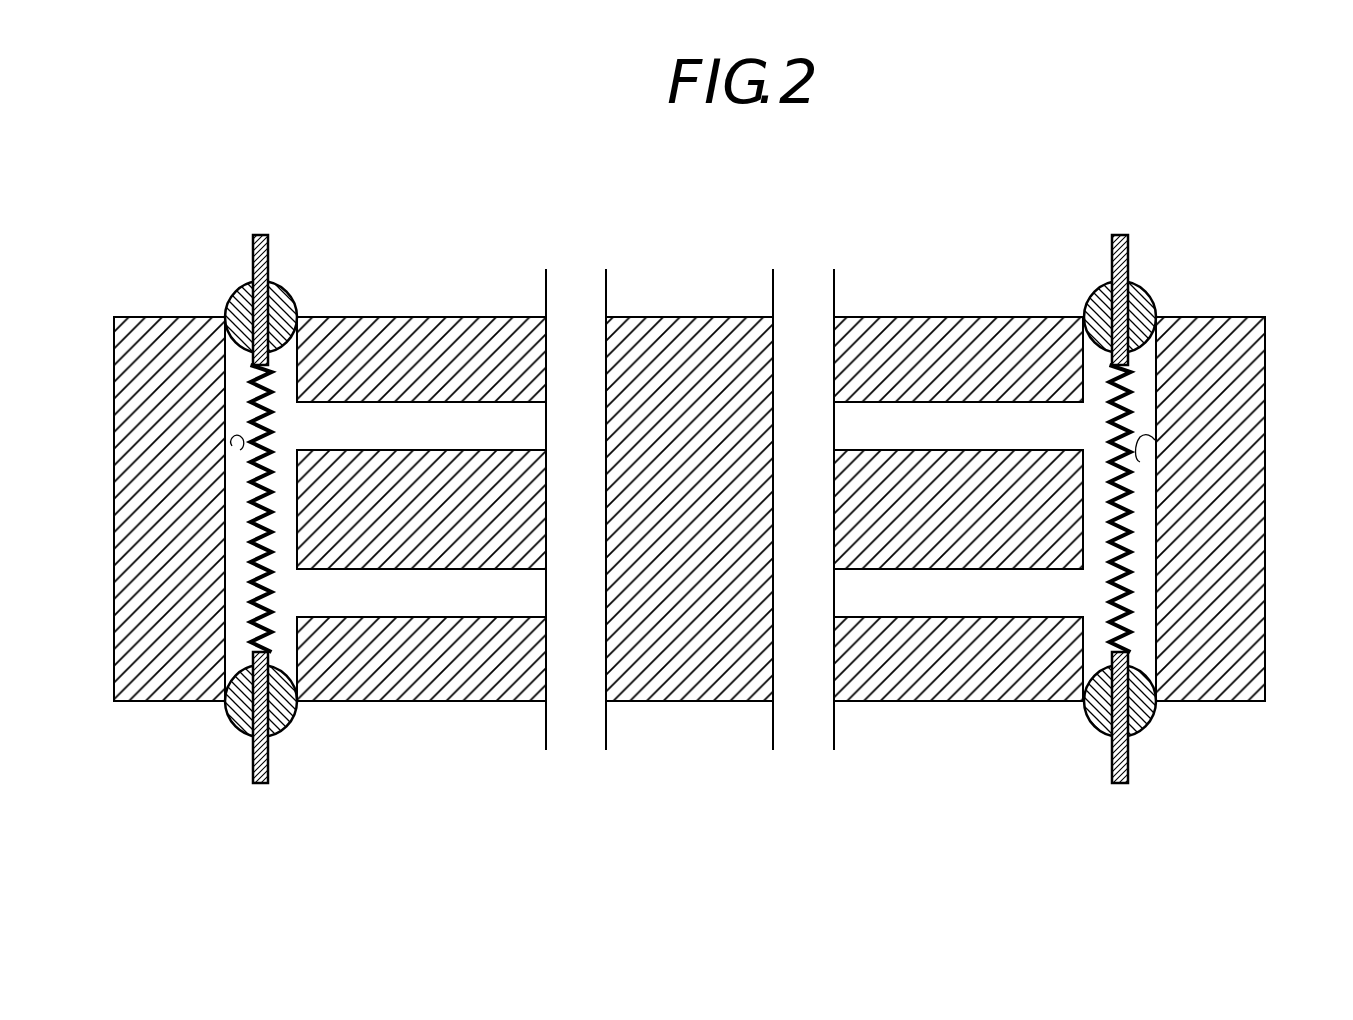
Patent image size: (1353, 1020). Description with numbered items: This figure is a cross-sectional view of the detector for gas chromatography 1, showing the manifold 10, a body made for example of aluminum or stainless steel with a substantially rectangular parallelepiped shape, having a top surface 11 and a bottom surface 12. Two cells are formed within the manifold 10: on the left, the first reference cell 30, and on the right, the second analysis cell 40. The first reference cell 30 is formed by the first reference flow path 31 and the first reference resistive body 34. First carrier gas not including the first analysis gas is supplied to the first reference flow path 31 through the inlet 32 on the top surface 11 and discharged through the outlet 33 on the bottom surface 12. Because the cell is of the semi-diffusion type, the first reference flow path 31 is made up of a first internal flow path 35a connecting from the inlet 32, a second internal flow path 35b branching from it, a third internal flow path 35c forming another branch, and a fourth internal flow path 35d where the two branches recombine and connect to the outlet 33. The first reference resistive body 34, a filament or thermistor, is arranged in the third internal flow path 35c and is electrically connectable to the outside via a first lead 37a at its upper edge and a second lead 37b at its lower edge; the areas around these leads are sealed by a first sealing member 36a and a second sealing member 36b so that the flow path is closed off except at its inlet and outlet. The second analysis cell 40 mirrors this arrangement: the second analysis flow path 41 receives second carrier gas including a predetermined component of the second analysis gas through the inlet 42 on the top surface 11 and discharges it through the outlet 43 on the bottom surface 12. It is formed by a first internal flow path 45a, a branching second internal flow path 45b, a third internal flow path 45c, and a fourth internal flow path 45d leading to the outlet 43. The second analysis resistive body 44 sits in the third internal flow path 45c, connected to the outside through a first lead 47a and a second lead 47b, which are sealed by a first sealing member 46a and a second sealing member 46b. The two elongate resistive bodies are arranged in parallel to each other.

The detector for gas chromatography 1 is at (1180, 165).
The manifold 10 is at (1268, 408).
The top surface 11 is at (1210, 317).
The bottom surface 12 is at (1205, 701).
The first reference cell 30 is at (424, 515).
The first reference flow path 31 is at (608, 290).
The inlet 32 is at (546, 287).
The outlet 33 is at (546, 735).
The first reference resistive body 34 is at (255, 503).
The first internal flow path 35a is at (546, 355).
The second internal flow path 35b is at (546, 505).
The third internal flow path 35c is at (240, 450).
The fourth internal flow path 35d is at (546, 655).
The first sealing member 36a is at (232, 302).
The second sealing member 36b is at (228, 715).
The first lead 37a is at (253, 250).
The second lead 37b is at (253, 768).
The second analysis cell 40 is at (1070, 517).
The second analysis flow path 41 is at (836, 290).
The inlet 42 is at (773, 287).
The outlet 43 is at (773, 735).
The second analysis resistive body 44 is at (1127, 508).
The first internal flow path 45a is at (834, 355).
The second internal flow path 45b is at (834, 505).
The third internal flow path 45c is at (1140, 462).
The fourth internal flow path 45d is at (834, 655).
The first sealing member 46a is at (1090, 302).
The second sealing member 46b is at (1152, 713).
The first lead 47a is at (1128, 250).
The second lead 47b is at (1128, 770).